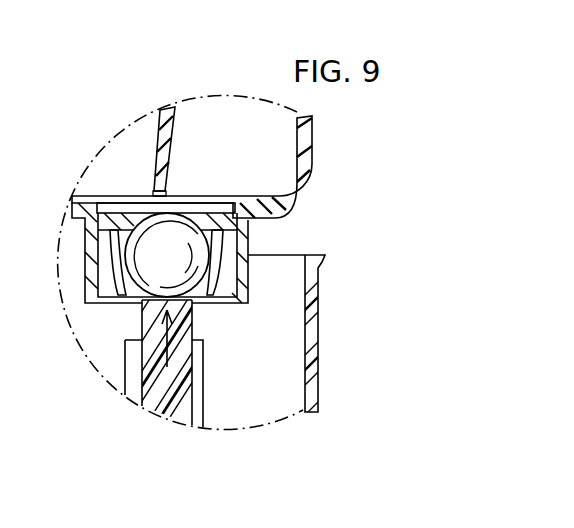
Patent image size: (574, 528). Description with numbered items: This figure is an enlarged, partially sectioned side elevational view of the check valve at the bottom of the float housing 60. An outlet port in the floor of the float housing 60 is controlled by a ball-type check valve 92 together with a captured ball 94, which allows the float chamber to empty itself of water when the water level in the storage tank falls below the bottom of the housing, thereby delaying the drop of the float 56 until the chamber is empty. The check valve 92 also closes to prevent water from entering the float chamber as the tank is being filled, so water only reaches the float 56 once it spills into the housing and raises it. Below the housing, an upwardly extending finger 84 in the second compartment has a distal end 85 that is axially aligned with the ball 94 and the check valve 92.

The float 56 is at (162, 142).
The float housing 60 is at (307, 172).
The finger 84 is at (157, 358).
The distal end 85 is at (155, 318).
The check valve 92 is at (232, 272).
The ball 94 is at (150, 252).